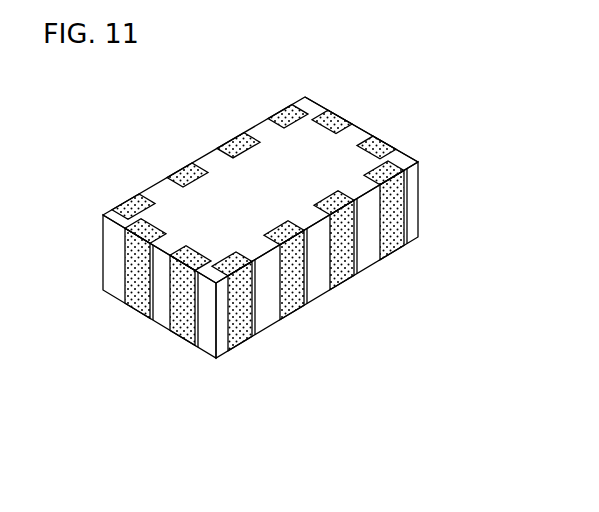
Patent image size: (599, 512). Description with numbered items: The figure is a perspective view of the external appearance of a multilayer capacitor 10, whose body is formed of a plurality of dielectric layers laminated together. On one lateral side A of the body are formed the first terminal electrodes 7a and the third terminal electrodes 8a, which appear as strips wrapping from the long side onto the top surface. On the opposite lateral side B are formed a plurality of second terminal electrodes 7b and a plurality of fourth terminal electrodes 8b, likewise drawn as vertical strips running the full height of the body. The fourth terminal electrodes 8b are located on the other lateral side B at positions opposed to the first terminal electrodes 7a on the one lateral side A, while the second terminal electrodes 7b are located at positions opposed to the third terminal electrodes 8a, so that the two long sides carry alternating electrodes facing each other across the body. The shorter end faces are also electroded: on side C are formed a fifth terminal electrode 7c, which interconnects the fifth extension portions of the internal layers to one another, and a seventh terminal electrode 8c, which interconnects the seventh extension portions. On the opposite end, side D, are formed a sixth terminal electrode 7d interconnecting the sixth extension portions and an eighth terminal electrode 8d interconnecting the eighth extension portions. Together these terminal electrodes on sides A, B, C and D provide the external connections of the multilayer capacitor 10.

The multilayer capacitor 10 is at (280, 226).
The one lateral side A is at (257, 127).
The other lateral side B is at (370, 250).
The side C is at (115, 283).
The side D is at (396, 158).
The first terminal electrodes 7a is at (180, 177).
The third terminal electrodes 8a is at (130, 205).
The second terminal electrodes 7b is at (243, 333).
The fourth terminal electrodes 8b is at (293, 303).
The fifth terminal electrode 7c is at (137, 305).
The seventh terminal electrode 8c is at (180, 333).
The sixth terminal electrode 7d is at (380, 147).
The eighth terminal electrode 8d is at (330, 117).